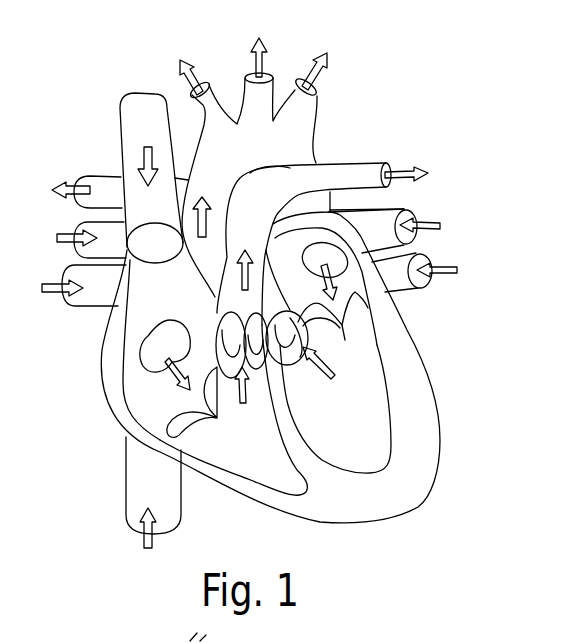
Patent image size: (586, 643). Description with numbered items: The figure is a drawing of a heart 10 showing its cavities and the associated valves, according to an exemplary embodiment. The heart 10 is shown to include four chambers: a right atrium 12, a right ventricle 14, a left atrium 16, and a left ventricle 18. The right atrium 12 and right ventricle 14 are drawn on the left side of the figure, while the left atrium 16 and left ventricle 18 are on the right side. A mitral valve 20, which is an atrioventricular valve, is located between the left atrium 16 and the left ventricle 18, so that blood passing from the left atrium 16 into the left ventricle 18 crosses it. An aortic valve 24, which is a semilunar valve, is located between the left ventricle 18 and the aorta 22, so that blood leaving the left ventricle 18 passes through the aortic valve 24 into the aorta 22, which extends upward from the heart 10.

The heart 10 is at (400, 495).
The right atrium 12 is at (157, 305).
The right ventricle 14 is at (240, 452).
The left atrium 16 is at (287, 258).
The left ventricle 18 is at (373, 408).
The mitral valve 20 is at (353, 303).
The aorta 22 is at (280, 147).
The aortic valve 24 is at (307, 337).